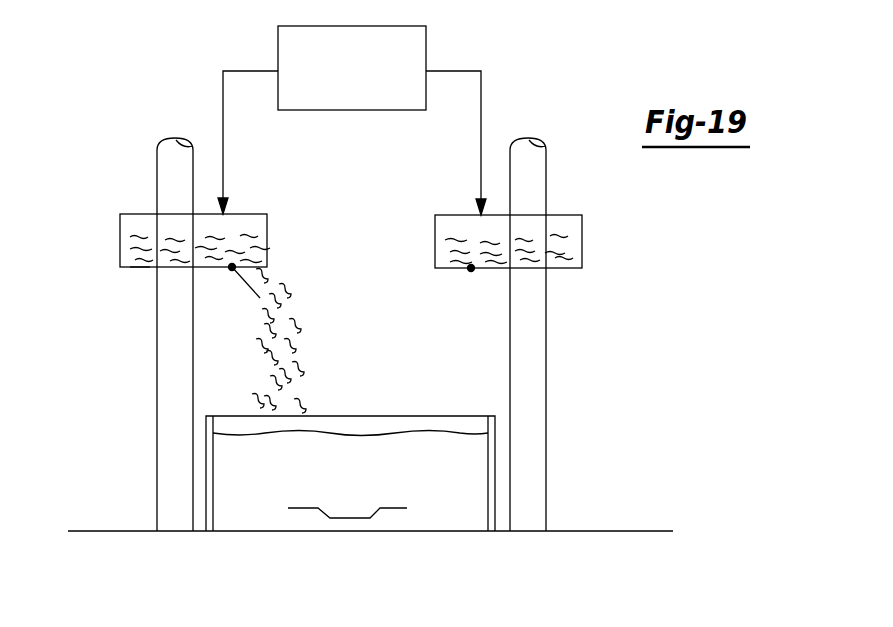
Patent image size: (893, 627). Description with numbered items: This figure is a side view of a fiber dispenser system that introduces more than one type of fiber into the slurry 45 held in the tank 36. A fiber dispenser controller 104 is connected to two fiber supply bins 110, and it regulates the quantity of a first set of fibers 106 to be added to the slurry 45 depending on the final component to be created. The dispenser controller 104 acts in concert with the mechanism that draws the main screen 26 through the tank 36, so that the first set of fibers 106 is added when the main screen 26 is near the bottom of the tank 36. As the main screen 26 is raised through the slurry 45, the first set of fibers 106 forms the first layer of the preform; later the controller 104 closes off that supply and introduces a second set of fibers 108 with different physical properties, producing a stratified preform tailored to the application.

The fiber dispenser controller 104 is at (426, 47).
The first set of fibers 106 is at (133, 248).
The second set of fibers 108 is at (570, 257).
The fiber supply bin 110 is at (140, 268).
The slurry 45 is at (468, 462).
The main screen 26 is at (333, 518).
The tank 36 is at (492, 518).